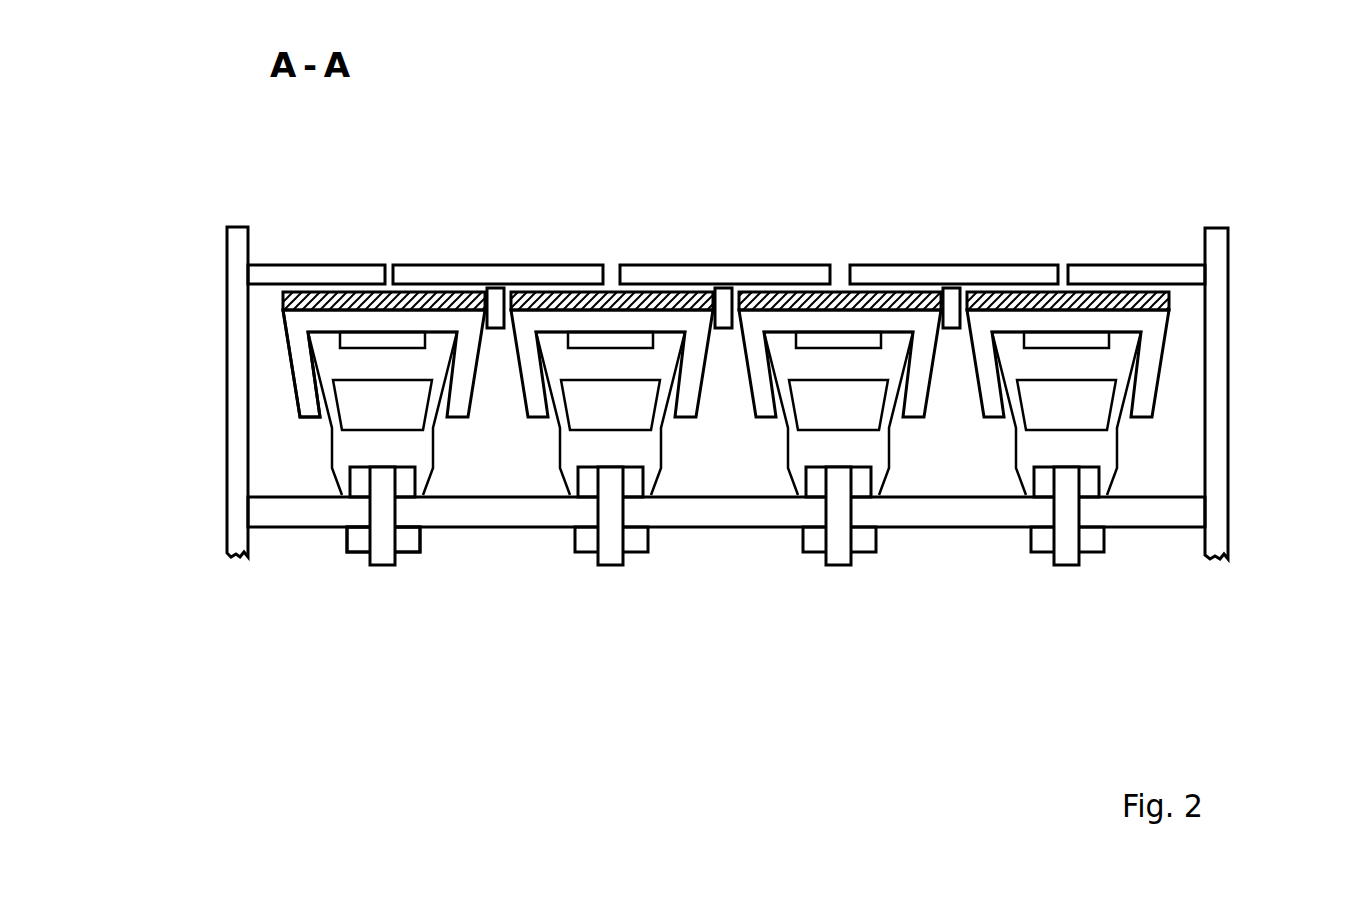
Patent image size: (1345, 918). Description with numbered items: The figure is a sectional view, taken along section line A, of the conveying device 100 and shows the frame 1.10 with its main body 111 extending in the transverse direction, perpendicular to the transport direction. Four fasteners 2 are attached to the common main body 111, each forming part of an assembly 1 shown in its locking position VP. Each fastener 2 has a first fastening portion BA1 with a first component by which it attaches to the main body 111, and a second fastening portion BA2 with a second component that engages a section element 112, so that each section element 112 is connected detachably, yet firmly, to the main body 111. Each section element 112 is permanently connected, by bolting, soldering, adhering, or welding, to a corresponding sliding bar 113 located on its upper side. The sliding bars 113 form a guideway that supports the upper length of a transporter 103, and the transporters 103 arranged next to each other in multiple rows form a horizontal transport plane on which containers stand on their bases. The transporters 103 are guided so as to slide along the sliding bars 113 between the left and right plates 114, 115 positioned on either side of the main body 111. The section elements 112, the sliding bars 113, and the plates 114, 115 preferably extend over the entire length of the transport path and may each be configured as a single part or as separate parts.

The device / battery module assembly 100 is at (175, 147).
The frame 1.10 is at (178, 545).
The left plate 114 is at (237, 398).
The right plate 115 is at (1215, 423).
The transporter 103 is at (940, 262).
The main body 111 is at (718, 517).
The section element 112 is at (1067, 178).
The sliding bar 113 is at (437, 292).
The assembly 1 is at (313, 467).
The fastener 2 is at (418, 453).
The first fastening portion BA1 is at (333, 533).
The second fastening portion BA2 is at (282, 388).
The locking position VP is at (410, 592).